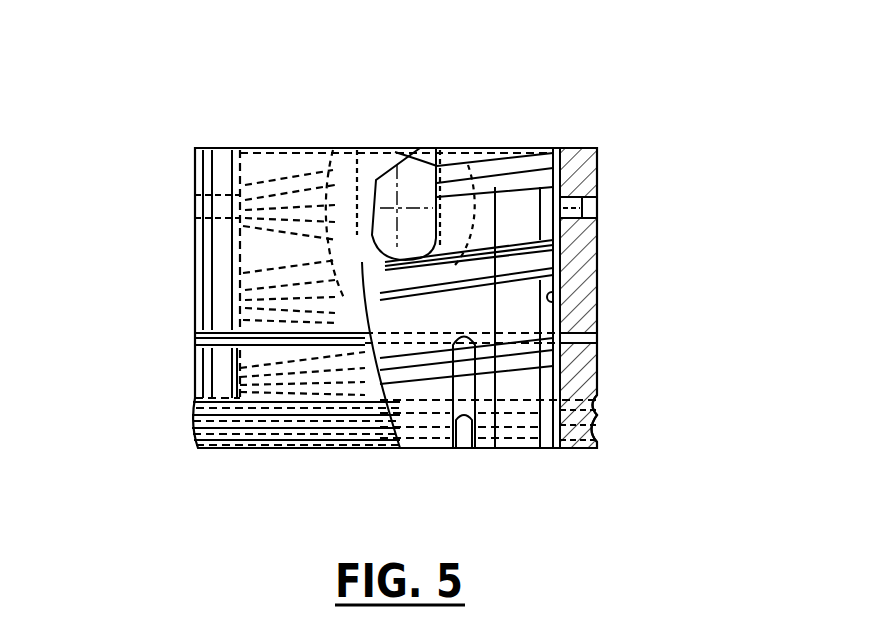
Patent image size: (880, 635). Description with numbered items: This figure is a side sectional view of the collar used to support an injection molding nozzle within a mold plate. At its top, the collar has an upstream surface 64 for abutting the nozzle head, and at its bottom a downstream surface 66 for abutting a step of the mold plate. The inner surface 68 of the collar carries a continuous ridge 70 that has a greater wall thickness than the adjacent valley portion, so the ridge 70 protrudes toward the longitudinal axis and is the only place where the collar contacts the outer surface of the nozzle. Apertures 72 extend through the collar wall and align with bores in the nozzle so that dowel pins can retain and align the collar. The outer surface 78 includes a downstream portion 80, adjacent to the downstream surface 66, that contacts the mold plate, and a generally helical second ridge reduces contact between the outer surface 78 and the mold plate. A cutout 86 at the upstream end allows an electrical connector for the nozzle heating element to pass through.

The upstream surface 64 is at (222, 147).
The downstream surface 66 is at (210, 452).
The inner surface 68 is at (548, 292).
The continuous ridge 70 is at (550, 265).
The apertures 72 is at (578, 206).
The outer surface 78 is at (195, 282).
The downstream portion 80 is at (604, 432).
The cutout 86 is at (412, 247).